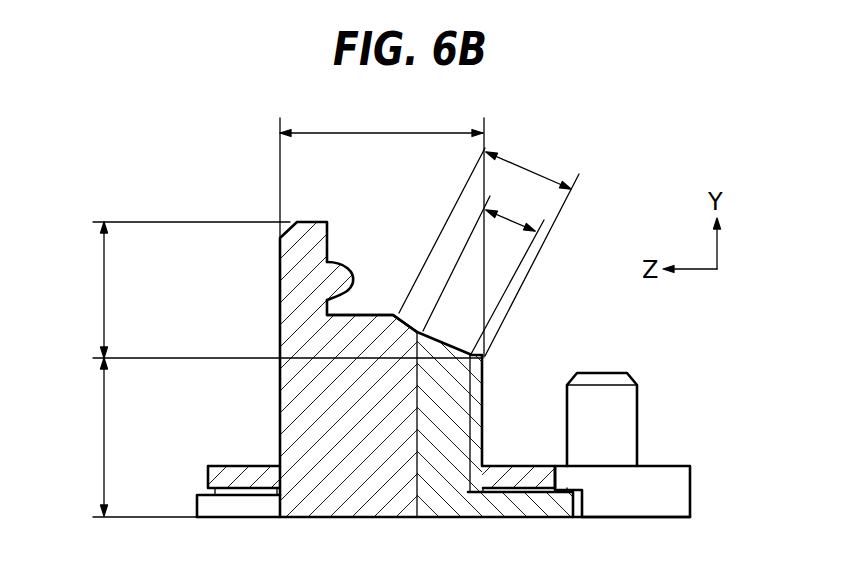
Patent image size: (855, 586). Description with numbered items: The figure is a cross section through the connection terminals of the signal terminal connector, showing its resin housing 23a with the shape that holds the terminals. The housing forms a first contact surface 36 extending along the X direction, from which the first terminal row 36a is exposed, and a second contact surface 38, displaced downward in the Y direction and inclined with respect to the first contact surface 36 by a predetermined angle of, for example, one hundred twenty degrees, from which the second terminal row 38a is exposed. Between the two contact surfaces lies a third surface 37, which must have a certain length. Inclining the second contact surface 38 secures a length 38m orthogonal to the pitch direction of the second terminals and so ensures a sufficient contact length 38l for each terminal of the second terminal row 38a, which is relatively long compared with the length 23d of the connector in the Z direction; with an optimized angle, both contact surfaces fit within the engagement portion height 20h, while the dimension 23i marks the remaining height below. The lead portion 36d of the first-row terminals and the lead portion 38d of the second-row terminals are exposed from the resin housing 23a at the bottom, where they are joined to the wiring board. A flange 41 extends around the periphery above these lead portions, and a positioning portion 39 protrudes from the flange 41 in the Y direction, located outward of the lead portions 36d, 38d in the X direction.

The first contact surface 36 is at (318, 221).
The first terminal row 36a is at (347, 277).
The third surface 37 is at (363, 313).
The second contact surface 38 is at (443, 334).
The second terminal row 38a is at (470, 410).
The lead portion 38d is at (537, 508).
The lead portion 36d is at (230, 508).
The resin housing 23a is at (352, 507).
The positioning portion 39 is at (630, 421).
The flange 41 is at (683, 487).
The length of the signal terminal connector in the Z direction 23d is at (381, 119).
The engagement portion height 20h is at (81, 290).
The height dimension 23i is at (85, 437).
The length orthogonal to the pitch direction of the second contact surface 38m is at (489, 246).
The contact length 38l is at (483, 274).